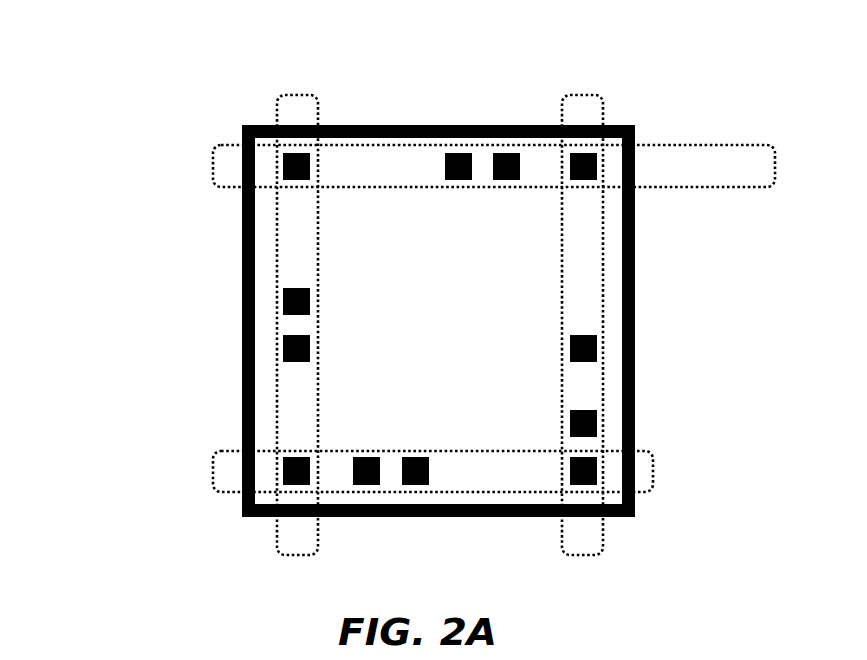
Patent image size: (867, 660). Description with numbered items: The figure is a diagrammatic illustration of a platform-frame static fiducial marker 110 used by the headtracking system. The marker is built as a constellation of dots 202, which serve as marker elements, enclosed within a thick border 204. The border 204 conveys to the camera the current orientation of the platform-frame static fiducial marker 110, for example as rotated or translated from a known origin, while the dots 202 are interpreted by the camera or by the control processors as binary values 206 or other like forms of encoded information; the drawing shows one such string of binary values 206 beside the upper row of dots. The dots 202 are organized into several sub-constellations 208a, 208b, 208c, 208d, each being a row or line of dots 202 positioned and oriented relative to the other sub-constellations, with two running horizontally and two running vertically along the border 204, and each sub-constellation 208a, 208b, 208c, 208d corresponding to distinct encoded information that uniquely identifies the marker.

The platform-frame static fiducial marker 110 is at (88, 75).
The dots 202 is at (287, 298).
The border 204 is at (477, 125).
The binary values 206 is at (702, 182).
The sub-constellation 208a is at (213, 172).
The sub-constellation 208b is at (213, 472).
The sub-constellation 208c is at (297, 555).
The sub-constellation 208d is at (582, 554).